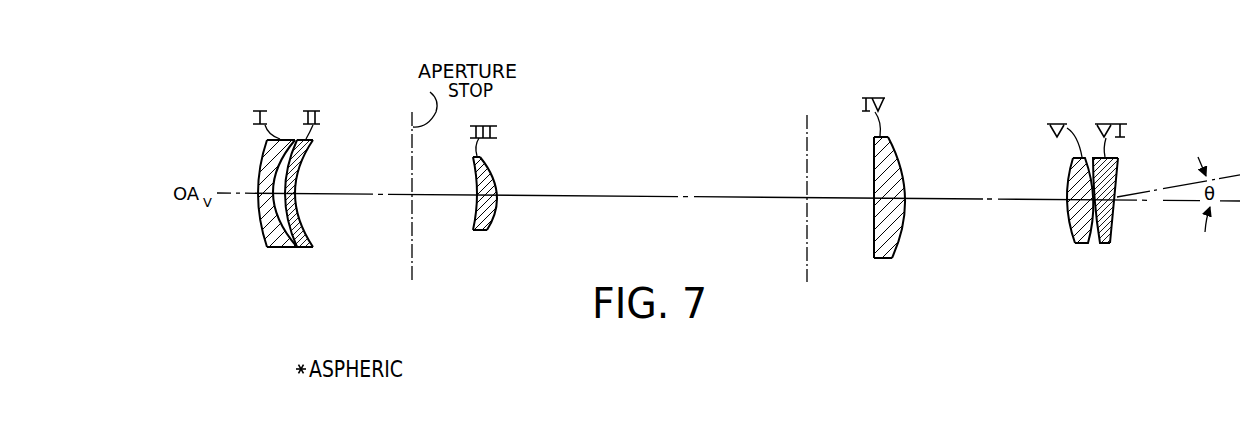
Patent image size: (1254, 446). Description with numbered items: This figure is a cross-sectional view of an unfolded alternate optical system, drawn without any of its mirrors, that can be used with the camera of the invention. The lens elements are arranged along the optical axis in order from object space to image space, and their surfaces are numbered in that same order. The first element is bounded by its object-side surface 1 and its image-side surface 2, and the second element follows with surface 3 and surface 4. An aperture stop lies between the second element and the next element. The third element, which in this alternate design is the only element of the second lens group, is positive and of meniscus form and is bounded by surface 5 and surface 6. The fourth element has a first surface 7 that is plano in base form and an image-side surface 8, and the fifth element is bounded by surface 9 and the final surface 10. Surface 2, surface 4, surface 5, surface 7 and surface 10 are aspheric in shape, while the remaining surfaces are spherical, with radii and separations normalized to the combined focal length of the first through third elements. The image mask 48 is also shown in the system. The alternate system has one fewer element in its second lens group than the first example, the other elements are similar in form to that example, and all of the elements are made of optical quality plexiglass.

The surface 1 of element I 1 is at (265, 152).
The surface 2 of element I 2 is at (275, 178).
The surface 3 of element II 3 is at (286, 208).
The surface 4 of element II 4 is at (306, 152).
The surface 5 of element III 5 is at (476, 175).
The surface 6 of element III 6 is at (492, 175).
The surface 7 of element IV 7 is at (874, 178).
The surface 8 of element IV 8 is at (897, 158).
The surface 9 of element V 9 is at (1068, 180).
The surface 10 of element V 10 is at (1118, 180).
The image mask 48 is at (807, 138).